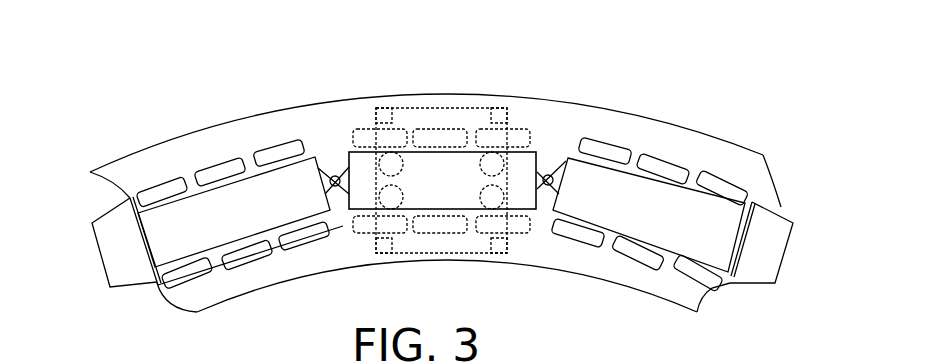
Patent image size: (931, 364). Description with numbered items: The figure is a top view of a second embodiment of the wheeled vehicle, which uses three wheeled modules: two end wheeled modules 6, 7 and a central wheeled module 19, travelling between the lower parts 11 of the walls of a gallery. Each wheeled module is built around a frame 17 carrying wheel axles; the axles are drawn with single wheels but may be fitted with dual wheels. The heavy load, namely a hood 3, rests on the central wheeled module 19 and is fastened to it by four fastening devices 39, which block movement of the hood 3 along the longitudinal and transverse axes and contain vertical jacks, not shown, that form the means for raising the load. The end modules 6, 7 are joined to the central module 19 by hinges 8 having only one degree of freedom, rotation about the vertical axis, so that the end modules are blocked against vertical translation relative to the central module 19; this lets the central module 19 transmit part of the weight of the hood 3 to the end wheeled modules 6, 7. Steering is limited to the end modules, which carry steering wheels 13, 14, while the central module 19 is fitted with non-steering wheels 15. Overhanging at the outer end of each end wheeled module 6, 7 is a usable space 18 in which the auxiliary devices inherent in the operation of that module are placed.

The hood 3 is at (480, 107).
The end wheeled module 6 is at (140, 82).
The end wheeled module 7 is at (672, 73).
The hinge 8 is at (336, 176).
The lower parts of the walls of the gallery 11 is at (263, 116).
The steering wheels 13 is at (173, 286).
The steering wheels 14 is at (253, 263).
The non-steering wheels 15 is at (314, 241).
The frame 17 is at (207, 205).
The usable space 18 is at (117, 230).
The central wheeled module 19 is at (463, 65).
The fastening devices 39 is at (387, 158).